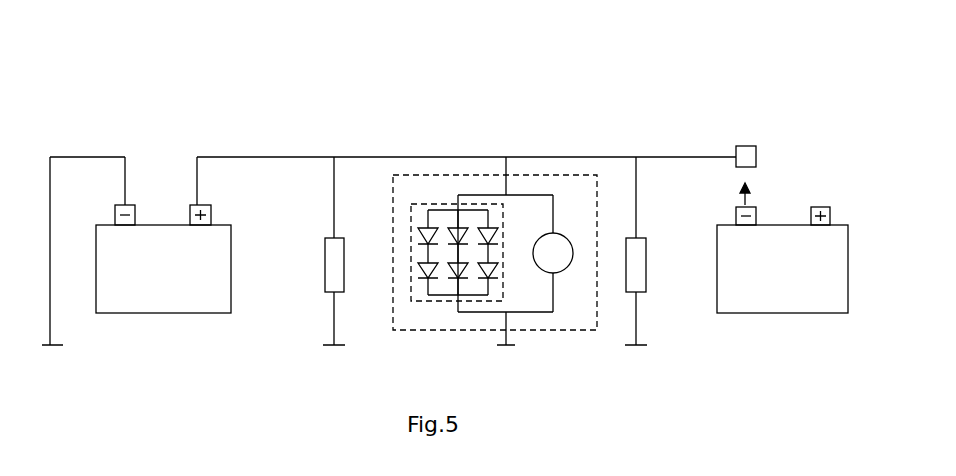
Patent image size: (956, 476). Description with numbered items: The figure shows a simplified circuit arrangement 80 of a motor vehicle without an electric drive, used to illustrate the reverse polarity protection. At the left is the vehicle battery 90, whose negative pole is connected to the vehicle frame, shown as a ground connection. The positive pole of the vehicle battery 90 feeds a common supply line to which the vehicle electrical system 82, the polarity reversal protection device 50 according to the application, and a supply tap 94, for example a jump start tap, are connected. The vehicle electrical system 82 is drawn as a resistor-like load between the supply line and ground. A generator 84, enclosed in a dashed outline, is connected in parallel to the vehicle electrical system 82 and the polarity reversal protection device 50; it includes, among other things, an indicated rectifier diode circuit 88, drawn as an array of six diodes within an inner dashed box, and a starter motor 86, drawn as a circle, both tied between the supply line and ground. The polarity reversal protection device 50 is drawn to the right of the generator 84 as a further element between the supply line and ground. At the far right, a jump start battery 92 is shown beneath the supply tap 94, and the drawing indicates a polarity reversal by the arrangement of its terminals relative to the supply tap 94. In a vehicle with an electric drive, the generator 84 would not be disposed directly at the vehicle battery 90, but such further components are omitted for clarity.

The circuit arrangement 80 is at (165, 47).
The vehicle battery 90 is at (155, 313).
The vehicle electrical system 82 is at (344, 258).
The generator 84 is at (453, 175).
The rectifier diode circuit 88 is at (414, 203).
The starter motor 86 is at (565, 233).
The polarity reversal protection device 50 is at (646, 255).
The supply tap 94 is at (748, 145).
The jump start battery 92 is at (779, 313).